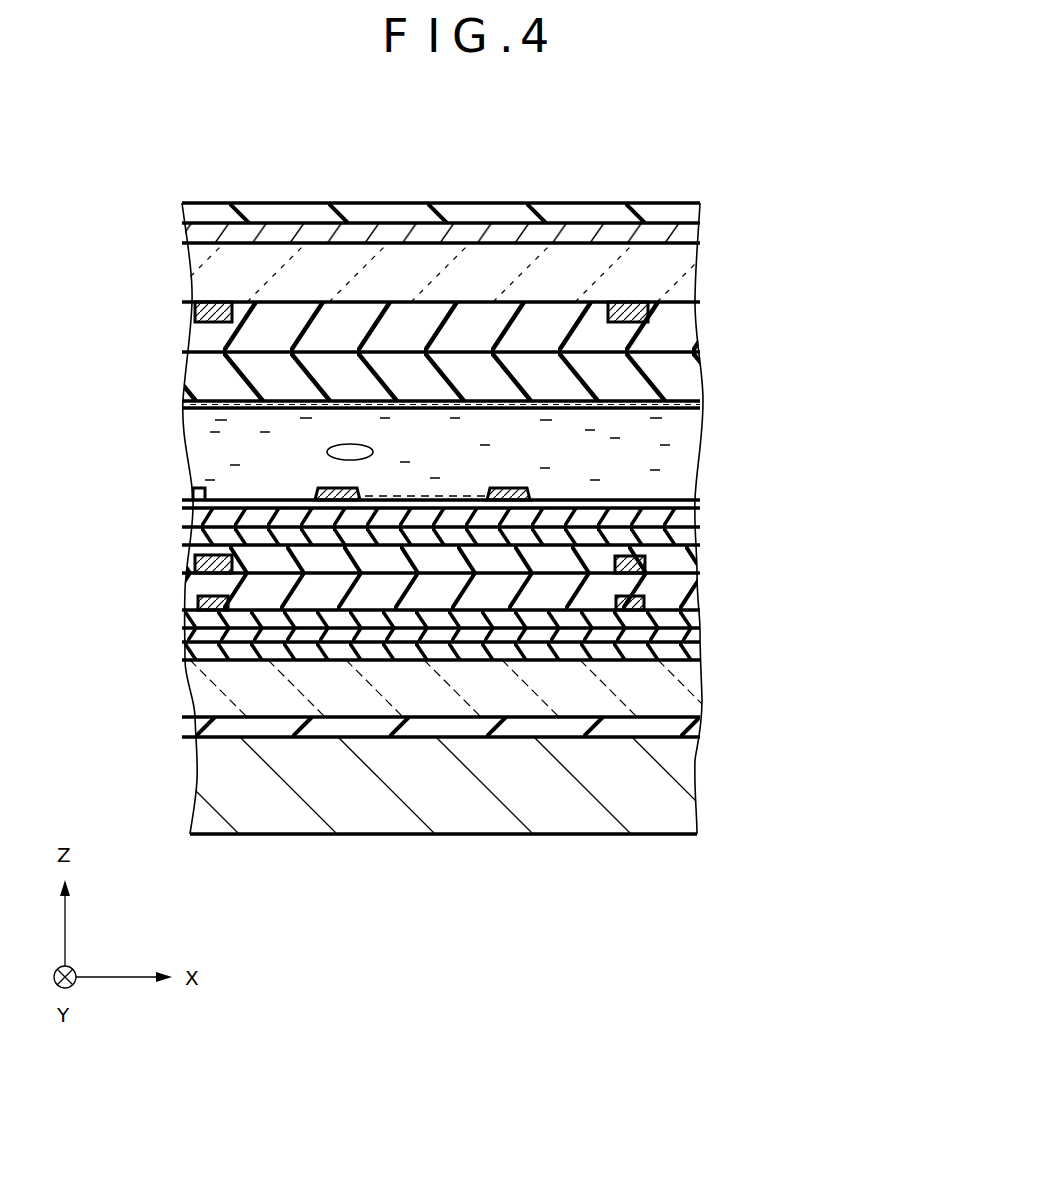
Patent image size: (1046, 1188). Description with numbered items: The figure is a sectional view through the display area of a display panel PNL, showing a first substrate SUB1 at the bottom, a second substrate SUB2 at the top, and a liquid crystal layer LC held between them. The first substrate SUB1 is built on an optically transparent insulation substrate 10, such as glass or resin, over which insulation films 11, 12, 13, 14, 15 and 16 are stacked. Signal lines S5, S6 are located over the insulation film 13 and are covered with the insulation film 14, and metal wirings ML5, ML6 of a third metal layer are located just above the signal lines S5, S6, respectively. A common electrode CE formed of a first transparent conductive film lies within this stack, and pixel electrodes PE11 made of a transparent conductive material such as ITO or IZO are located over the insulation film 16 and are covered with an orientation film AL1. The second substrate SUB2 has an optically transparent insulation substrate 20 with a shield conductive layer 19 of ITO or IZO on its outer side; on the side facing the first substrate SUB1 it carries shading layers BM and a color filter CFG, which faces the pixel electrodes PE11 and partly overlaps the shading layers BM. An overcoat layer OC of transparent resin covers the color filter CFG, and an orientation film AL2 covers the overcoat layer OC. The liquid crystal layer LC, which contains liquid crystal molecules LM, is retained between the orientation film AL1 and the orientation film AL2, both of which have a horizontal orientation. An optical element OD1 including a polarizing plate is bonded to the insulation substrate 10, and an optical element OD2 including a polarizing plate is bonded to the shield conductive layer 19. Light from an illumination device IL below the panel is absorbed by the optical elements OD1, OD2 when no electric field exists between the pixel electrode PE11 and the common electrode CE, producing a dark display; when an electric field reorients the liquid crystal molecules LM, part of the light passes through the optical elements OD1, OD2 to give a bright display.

The display panel PNL is at (702, 170).
The optical element OD2 is at (700, 212).
The shield conductive layer 19 is at (700, 238).
The insulation substrate 20 is at (697, 280).
The second substrate SUB2 is at (712, 318).
The color filter CFG is at (440, 322).
The shading layers BM is at (226, 320).
The overcoat layer OC is at (700, 370).
The orientation film AL2 is at (692, 408).
The liquid crystal layer LC is at (683, 447).
The liquid crystal molecules LM is at (326, 452).
The pixel electrode PE11 is at (505, 486).
The orientation film AL1 is at (683, 487).
The insulation film 16 is at (690, 515).
The common electrode CE is at (196, 535).
The insulation film 15 is at (697, 553).
The metal wiring ML5 is at (192, 568).
The metal wiring ML6 is at (626, 556).
The first substrate SUB1 is at (714, 574).
The insulation film 14 is at (688, 595).
The insulation film 13 is at (700, 617).
The insulation film 12 is at (702, 642).
The insulation film 11 is at (700, 667).
The insulation substrate 10 is at (700, 702).
The optical element OD1 is at (700, 737).
The illumination device IL is at (655, 812).
The signal line S5 is at (215, 610).
The signal line S6 is at (628, 610).